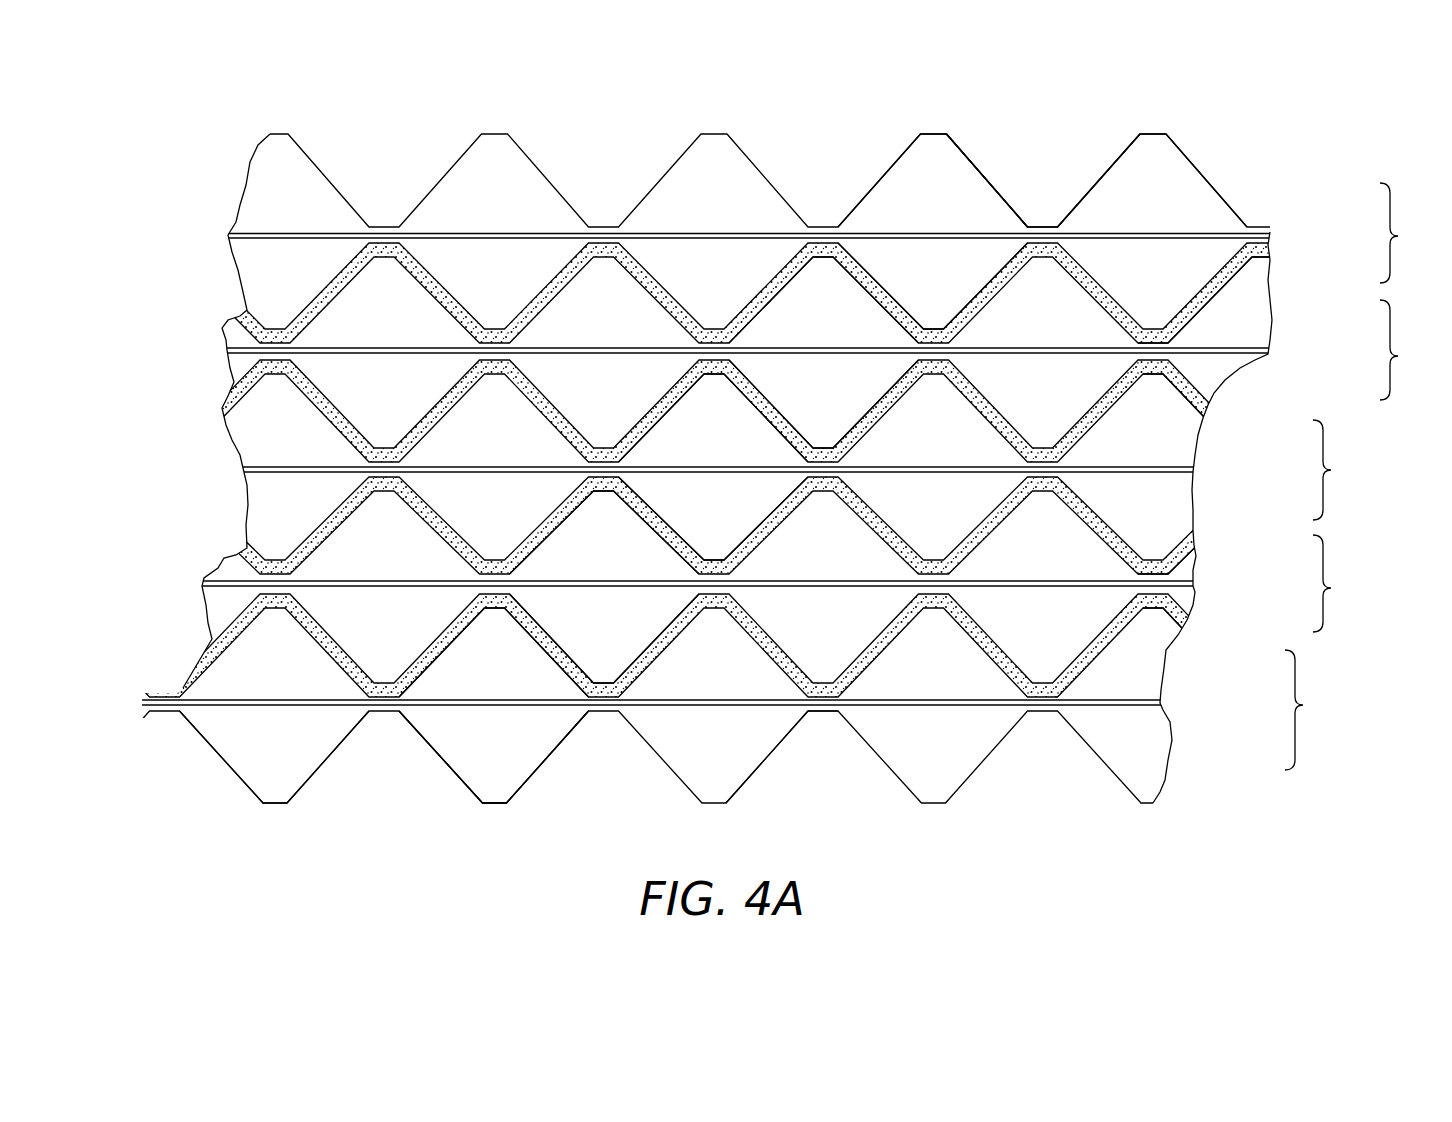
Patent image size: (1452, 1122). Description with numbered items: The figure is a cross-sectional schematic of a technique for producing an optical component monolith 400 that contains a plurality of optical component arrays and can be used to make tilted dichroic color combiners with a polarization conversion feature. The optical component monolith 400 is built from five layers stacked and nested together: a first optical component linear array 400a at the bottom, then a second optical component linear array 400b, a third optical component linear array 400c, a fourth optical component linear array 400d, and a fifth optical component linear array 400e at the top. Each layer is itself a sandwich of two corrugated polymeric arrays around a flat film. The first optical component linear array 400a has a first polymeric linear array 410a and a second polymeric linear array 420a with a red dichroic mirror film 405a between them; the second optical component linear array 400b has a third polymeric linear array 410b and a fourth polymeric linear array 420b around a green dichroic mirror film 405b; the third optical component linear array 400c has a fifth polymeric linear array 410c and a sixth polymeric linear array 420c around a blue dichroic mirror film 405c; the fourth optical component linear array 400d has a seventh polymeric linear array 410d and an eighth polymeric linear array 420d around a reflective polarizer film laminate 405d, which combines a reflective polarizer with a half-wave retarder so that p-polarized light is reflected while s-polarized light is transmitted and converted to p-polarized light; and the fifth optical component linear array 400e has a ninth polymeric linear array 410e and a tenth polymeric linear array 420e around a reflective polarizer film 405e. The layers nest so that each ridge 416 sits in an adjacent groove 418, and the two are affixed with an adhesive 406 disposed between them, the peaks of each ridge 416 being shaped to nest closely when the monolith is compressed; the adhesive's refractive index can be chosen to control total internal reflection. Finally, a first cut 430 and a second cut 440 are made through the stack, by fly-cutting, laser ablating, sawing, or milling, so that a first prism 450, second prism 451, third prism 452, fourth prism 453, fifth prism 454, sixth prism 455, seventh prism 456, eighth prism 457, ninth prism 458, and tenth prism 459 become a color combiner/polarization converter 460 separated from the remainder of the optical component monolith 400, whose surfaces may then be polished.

The optical component monolith 400 is at (202, 104).
The first optical component linear array 400a is at (667, 720).
The second optical component linear array 400b is at (677, 645).
The third optical component linear array 400c is at (677, 474).
The fourth optical component linear array 400d is at (709, 359).
The fifth optical component linear array 400e is at (709, 475).
The red dichroic mirror film 405a is at (142, 703).
The green dichroic mirror film 405b is at (202, 584).
The blue dichroic mirror film 405c is at (243, 469).
The reflective polarizer film laminate 405d is at (227, 351).
The reflective polarizer film 405e is at (228, 236).
The first polymeric linear array 410a is at (1178, 673).
The third polymeric linear array 410b is at (1210, 561).
The fifth polymeric linear array 410c is at (1212, 446).
The seventh polymeric linear array 410d is at (1277, 323).
The ninth polymeric linear array 410e is at (1277, 207).
The second polymeric linear array 420a is at (1185, 745).
The fourth polymeric linear array 420b is at (1205, 604).
The sixth polymeric linear array 420c is at (1204, 497).
The eighth polymeric linear array 420d is at (1268, 375).
The tenth polymeric linear array 420e is at (1277, 250).
The adhesive 406 is at (1002, 655).
The ridge 416 is at (762, 772).
The groove 418 is at (827, 716).
The first cut 430 is at (947, 130).
The second cut 440 is at (1172, 133).
The color combiner/polarization converter 460 is at (1000, 180).
The first prism 450 is at (473, 759).
The second prism 451 is at (473, 681).
The third prism 452 is at (581, 636).
The fourth prism 453 is at (581, 559).
The fifth prism 454 is at (691, 520).
The sixth prism 455 is at (691, 444).
The seventh prism 456 is at (801, 401).
The eighth prism 457 is at (801, 327).
The ninth prism 458 is at (911, 282).
The tenth prism 459 is at (911, 206).